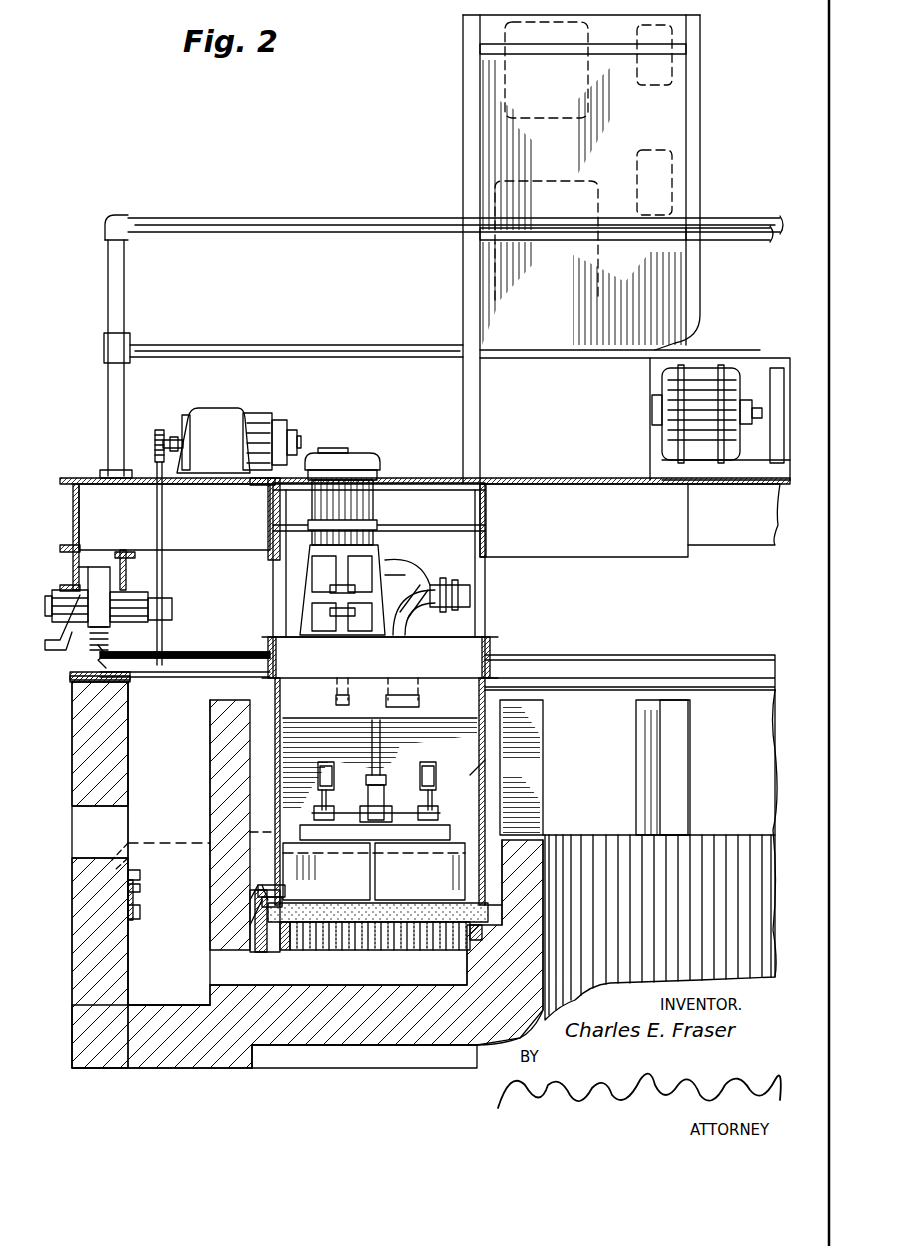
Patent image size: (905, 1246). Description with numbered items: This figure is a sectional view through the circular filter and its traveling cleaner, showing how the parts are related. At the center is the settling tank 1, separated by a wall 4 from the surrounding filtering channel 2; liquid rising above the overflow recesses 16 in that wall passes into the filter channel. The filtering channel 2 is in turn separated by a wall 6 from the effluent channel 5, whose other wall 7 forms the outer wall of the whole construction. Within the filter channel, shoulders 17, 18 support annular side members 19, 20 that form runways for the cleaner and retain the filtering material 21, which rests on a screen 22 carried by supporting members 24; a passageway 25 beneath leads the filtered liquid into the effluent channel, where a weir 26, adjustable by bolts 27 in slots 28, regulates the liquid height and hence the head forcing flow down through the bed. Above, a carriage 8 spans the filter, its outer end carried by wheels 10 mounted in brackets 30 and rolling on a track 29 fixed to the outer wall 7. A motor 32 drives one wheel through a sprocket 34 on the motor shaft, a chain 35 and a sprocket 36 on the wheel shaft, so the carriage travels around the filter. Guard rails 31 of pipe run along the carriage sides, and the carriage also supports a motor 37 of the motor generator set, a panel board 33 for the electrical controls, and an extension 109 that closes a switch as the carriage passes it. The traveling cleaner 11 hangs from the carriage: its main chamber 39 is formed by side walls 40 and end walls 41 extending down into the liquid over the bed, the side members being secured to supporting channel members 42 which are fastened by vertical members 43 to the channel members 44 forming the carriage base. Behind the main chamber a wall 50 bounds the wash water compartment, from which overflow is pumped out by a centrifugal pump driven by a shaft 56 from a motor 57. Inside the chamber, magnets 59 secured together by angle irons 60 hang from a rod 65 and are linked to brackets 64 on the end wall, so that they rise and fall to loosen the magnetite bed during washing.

The settling tank 1 is at (636, 960).
The filtering channel 2 is at (258, 860).
The wall 4 is at (520, 850).
The effluent channel 5 is at (165, 1000).
The wall 6 is at (214, 770).
The outer wall 7 is at (73, 720).
The carriage 8 is at (73, 497).
The wheels 10 is at (93, 570).
The traveling cleaner 11 is at (484, 770).
The overflow recesses 16 is at (598, 835).
The extension or shoulder 17 is at (415, 1040).
The extension or shoulder 18 is at (278, 935).
The annular side member 19 is at (495, 905).
The annular side member 20 is at (258, 925).
The filtering material 21 is at (430, 912).
The screen 22 is at (372, 950).
The supporting members 24 is at (305, 945).
The passageway 25 is at (445, 951).
The weir 26 is at (145, 843).
The bolts 27 is at (140, 878).
The slots 28 is at (140, 893).
The track 29 is at (98, 660).
The brackets 30 is at (54, 597).
The guard rails 31 is at (178, 218).
The motor 32 is at (221, 414).
The panel board 33 is at (668, 124).
The sprocket 34 is at (160, 430).
The chain 35 is at (160, 510).
The sprocket 36 is at (163, 640).
The motor 37 is at (720, 419).
The chamber 39 is at (459, 727).
The side walls 40 is at (276, 746).
The end walls 41 is at (467, 752).
The supporting channel members 42 is at (268, 645).
The vertical members 43 is at (274, 579).
The channel members 44 is at (268, 508).
The wall 50 is at (606, 671).
The shaft 56 is at (336, 690).
The motor 57 is at (370, 510).
The magnets 59 is at (374, 871).
The angle irons 60 is at (432, 811).
The brackets 64 is at (425, 764).
The rod 65 is at (382, 752).
The extension 109 is at (46, 622).